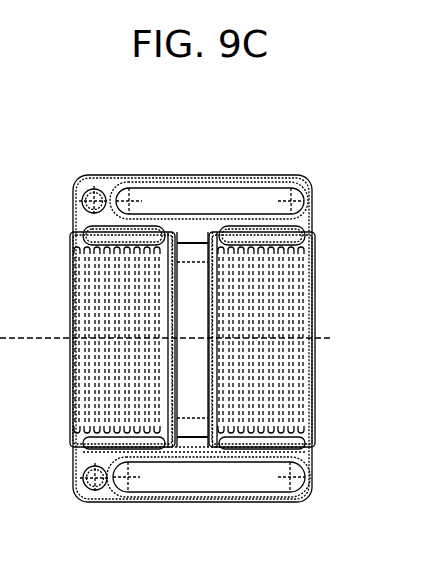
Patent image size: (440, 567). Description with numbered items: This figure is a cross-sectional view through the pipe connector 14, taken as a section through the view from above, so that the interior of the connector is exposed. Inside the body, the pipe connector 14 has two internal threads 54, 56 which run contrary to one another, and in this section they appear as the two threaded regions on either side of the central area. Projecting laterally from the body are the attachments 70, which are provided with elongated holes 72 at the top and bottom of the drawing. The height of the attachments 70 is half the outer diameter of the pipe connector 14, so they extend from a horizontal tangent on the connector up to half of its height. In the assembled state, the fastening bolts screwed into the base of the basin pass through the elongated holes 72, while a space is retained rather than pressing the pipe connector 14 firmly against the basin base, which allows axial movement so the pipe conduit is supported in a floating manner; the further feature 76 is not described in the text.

The pipe connector 14 is at (318, 385).
The internal thread 54 is at (313, 262).
The internal thread 56 is at (72, 407).
The lateral attachment 70 is at (275, 176).
The elongated hole 72 is at (175, 203).
The mounting hole 76 is at (100, 497).